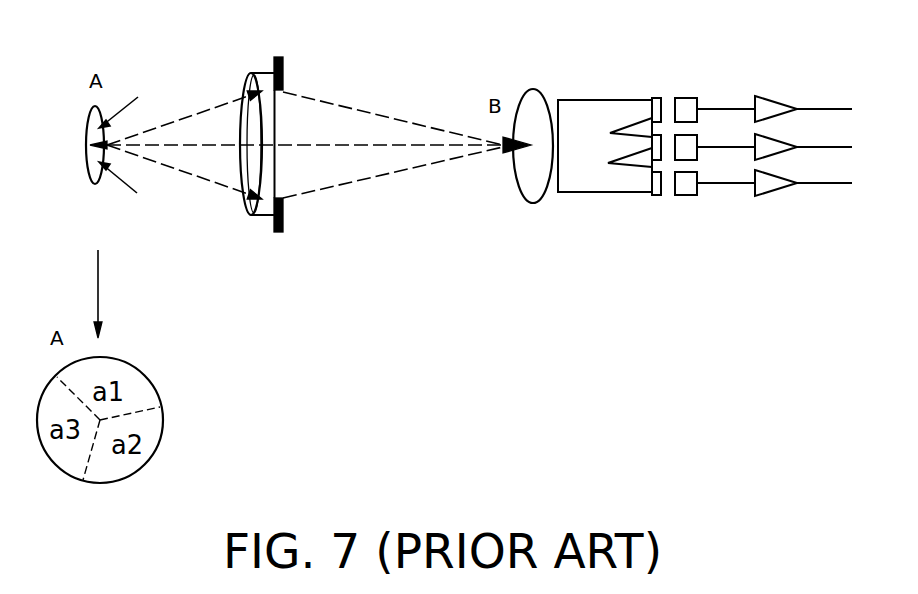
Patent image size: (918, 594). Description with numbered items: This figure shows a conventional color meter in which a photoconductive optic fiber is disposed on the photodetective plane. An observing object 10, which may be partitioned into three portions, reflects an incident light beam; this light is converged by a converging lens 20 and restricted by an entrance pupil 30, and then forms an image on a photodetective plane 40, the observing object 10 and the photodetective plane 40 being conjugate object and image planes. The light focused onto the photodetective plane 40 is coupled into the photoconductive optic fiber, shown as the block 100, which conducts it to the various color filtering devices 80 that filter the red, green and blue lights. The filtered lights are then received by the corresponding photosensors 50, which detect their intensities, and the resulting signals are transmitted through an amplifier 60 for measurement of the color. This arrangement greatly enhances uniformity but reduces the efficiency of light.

The observing object 10 is at (92, 177).
The converging lens 20 is at (245, 200).
The entrance pupil 30 is at (283, 227).
The photodetective plane 40 is at (520, 165).
The photosensors 50 is at (697, 115).
The amplifier 60 is at (782, 182).
The color filtering devices 80 is at (655, 185).
The color separating prism 100 is at (593, 115).